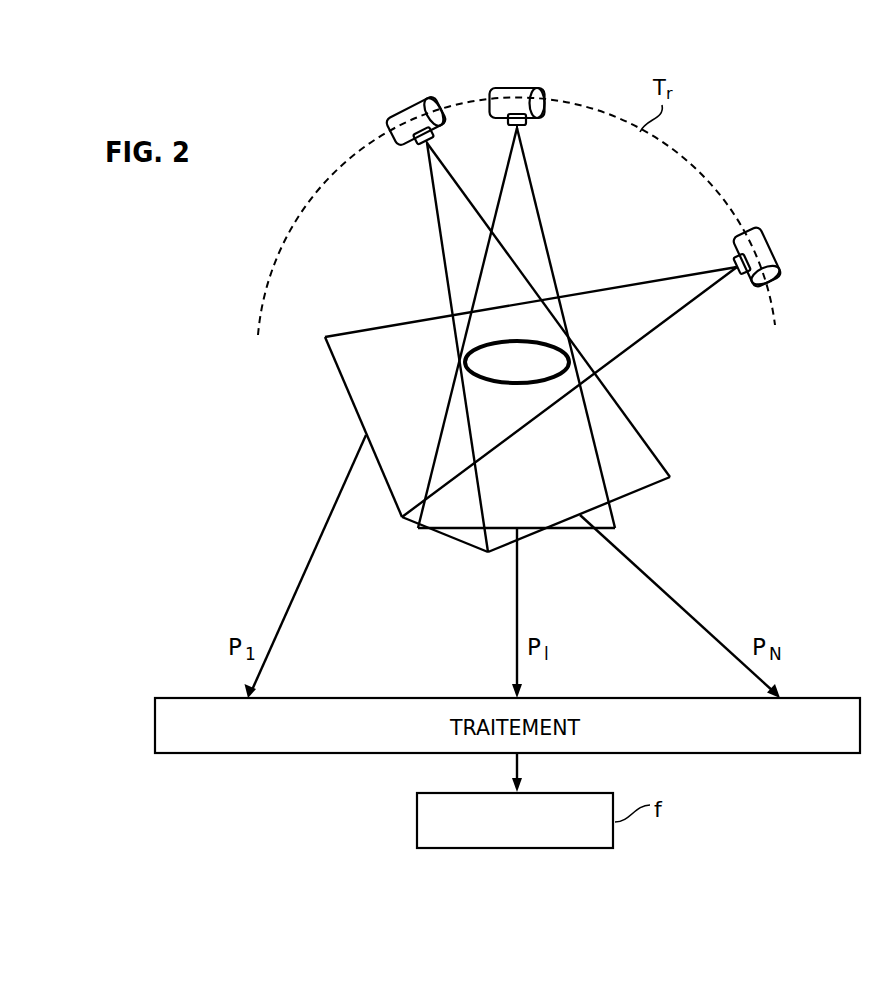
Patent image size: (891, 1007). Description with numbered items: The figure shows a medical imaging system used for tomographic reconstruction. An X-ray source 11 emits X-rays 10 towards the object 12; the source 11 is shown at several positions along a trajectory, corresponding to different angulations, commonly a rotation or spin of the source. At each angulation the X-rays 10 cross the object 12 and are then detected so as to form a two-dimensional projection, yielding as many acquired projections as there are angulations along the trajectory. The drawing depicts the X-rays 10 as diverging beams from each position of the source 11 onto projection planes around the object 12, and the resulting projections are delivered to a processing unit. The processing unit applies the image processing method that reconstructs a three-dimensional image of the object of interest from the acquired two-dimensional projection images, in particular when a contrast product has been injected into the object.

The X-rays 10 is at (442, 253).
The X-ray source 11 is at (418, 122).
The object 12 is at (505, 366).